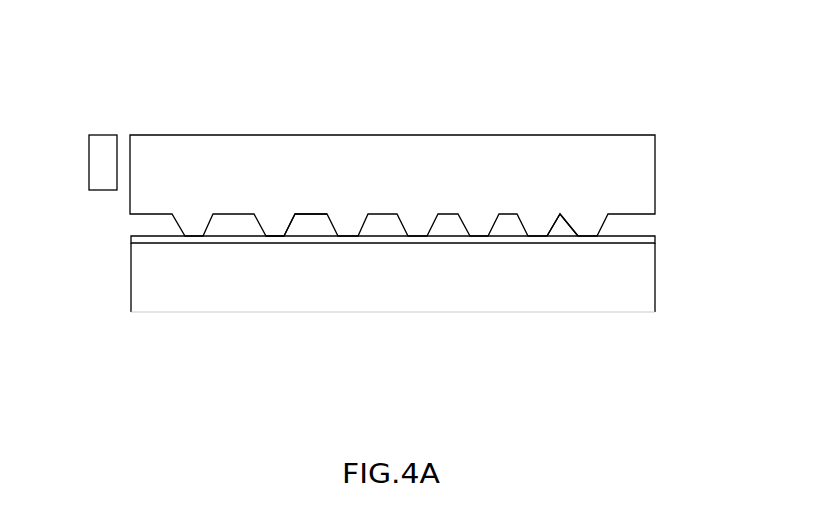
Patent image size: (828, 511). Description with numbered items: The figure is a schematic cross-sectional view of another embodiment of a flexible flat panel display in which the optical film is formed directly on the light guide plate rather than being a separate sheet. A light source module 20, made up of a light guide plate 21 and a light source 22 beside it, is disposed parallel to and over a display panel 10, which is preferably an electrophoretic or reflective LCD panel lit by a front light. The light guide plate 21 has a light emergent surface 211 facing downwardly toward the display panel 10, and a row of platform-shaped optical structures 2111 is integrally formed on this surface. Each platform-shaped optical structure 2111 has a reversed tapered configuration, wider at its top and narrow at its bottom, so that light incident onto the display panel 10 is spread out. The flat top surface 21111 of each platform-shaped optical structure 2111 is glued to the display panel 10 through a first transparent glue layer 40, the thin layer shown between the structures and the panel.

The display panel 10 is at (393, 300).
The light source module 20 is at (172, 38).
The light guide plate 21 is at (203, 150).
The light source 22 is at (89, 163).
The first transparent glue layer 40 is at (137, 240).
The light emergent surface 211 is at (560, 214).
The platform-shaped optical structure 2111 is at (282, 223).
The flat top surface 21111 is at (273, 236).